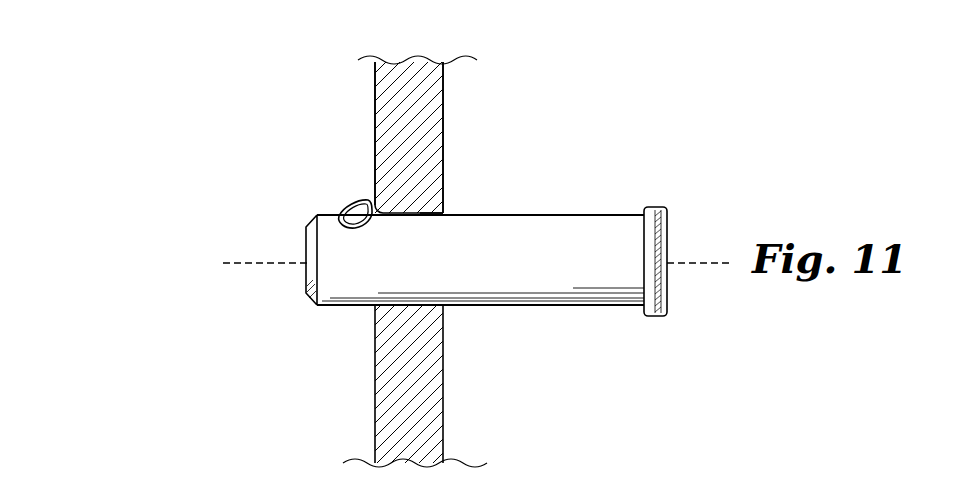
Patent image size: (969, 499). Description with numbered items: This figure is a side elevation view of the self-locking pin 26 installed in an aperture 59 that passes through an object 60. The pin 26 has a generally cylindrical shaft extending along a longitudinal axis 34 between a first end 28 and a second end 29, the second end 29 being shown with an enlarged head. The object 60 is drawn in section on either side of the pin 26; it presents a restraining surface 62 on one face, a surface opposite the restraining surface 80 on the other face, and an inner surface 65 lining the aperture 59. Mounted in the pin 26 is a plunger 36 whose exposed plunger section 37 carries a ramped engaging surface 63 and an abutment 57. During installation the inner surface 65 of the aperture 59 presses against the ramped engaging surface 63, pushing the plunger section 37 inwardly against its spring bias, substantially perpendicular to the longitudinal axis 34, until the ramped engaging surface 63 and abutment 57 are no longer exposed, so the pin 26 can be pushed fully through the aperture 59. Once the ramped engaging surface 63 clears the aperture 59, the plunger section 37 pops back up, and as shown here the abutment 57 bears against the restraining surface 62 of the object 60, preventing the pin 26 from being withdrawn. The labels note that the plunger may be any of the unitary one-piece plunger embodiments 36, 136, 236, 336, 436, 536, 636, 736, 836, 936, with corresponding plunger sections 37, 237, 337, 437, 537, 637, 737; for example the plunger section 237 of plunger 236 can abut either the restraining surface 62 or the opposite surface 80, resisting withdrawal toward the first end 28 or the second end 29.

The self-locking pin 26 is at (538, 192).
The first end 28 is at (306, 278).
The second end 29 is at (640, 305).
The longitudinal axis 34 is at (454, 300).
The plunger 36 is at (382, 286).
The plunger 136 is at (382, 286).
The plunger 236 is at (382, 286).
The plunger 336 is at (382, 286).
The plunger 436 is at (382, 286).
The plunger 536 is at (382, 286).
The plunger 636 is at (382, 286).
The plunger 736 is at (382, 286).
The plunger 836 is at (382, 286).
The plunger 936 is at (382, 286).
The plunger section 37 is at (225, 180).
The plunger section 237 is at (225, 180).
The plunger section 337 is at (225, 180).
The plunger section 437 is at (225, 180).
The plunger section 537 is at (225, 180).
The plunger section 637 is at (225, 180).
The plunger section 737 is at (225, 180).
The abutment 57 is at (380, 200).
The aperture 59 is at (446, 213).
The object 60 is at (427, 130).
The restraining surface 62 is at (375, 77).
The ramped engaging surface 63 is at (337, 180).
The inner surface 65 is at (378, 336).
The surface opposite the restraining surface 80 is at (445, 95).